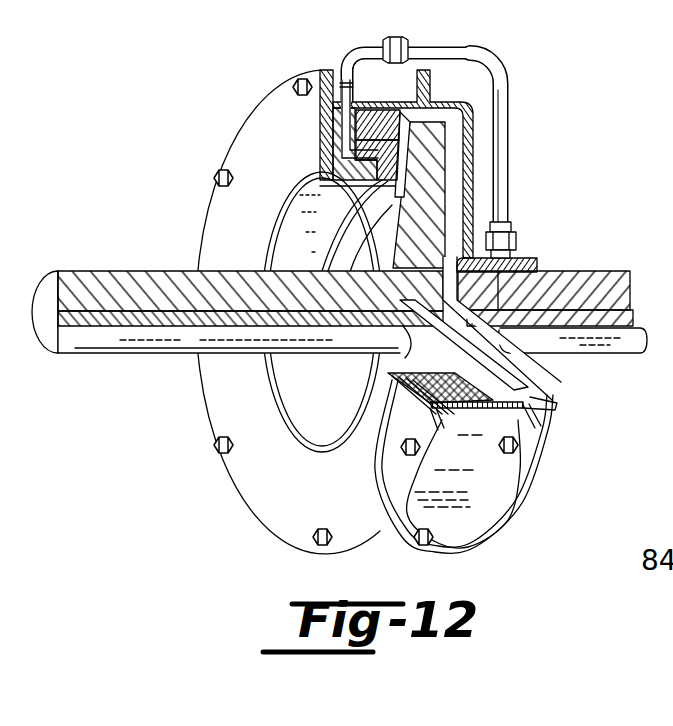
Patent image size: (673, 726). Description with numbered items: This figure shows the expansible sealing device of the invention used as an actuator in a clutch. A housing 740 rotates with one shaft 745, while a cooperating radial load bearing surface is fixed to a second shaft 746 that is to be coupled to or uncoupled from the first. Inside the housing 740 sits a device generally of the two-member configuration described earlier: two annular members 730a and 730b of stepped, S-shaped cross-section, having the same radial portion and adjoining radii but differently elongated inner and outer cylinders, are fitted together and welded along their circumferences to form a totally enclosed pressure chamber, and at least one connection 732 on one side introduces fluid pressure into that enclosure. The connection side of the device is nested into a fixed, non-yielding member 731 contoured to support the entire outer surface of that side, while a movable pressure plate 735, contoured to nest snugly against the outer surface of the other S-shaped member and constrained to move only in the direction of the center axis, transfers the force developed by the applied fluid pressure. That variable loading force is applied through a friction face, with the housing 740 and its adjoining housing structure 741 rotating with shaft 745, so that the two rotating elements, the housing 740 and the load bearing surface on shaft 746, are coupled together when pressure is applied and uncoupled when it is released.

The housing 740 is at (247, 525).
The shaft 746 is at (133, 285).
The shaft 745 is at (600, 271).
The housing 741 is at (277, 88).
The spacer sleeve 735 is at (408, 140).
The seal housing block 731 is at (325, 112).
The seal member 730b is at (370, 142).
The seal member 730a is at (367, 160).
The fluid tube 732 is at (352, 105).